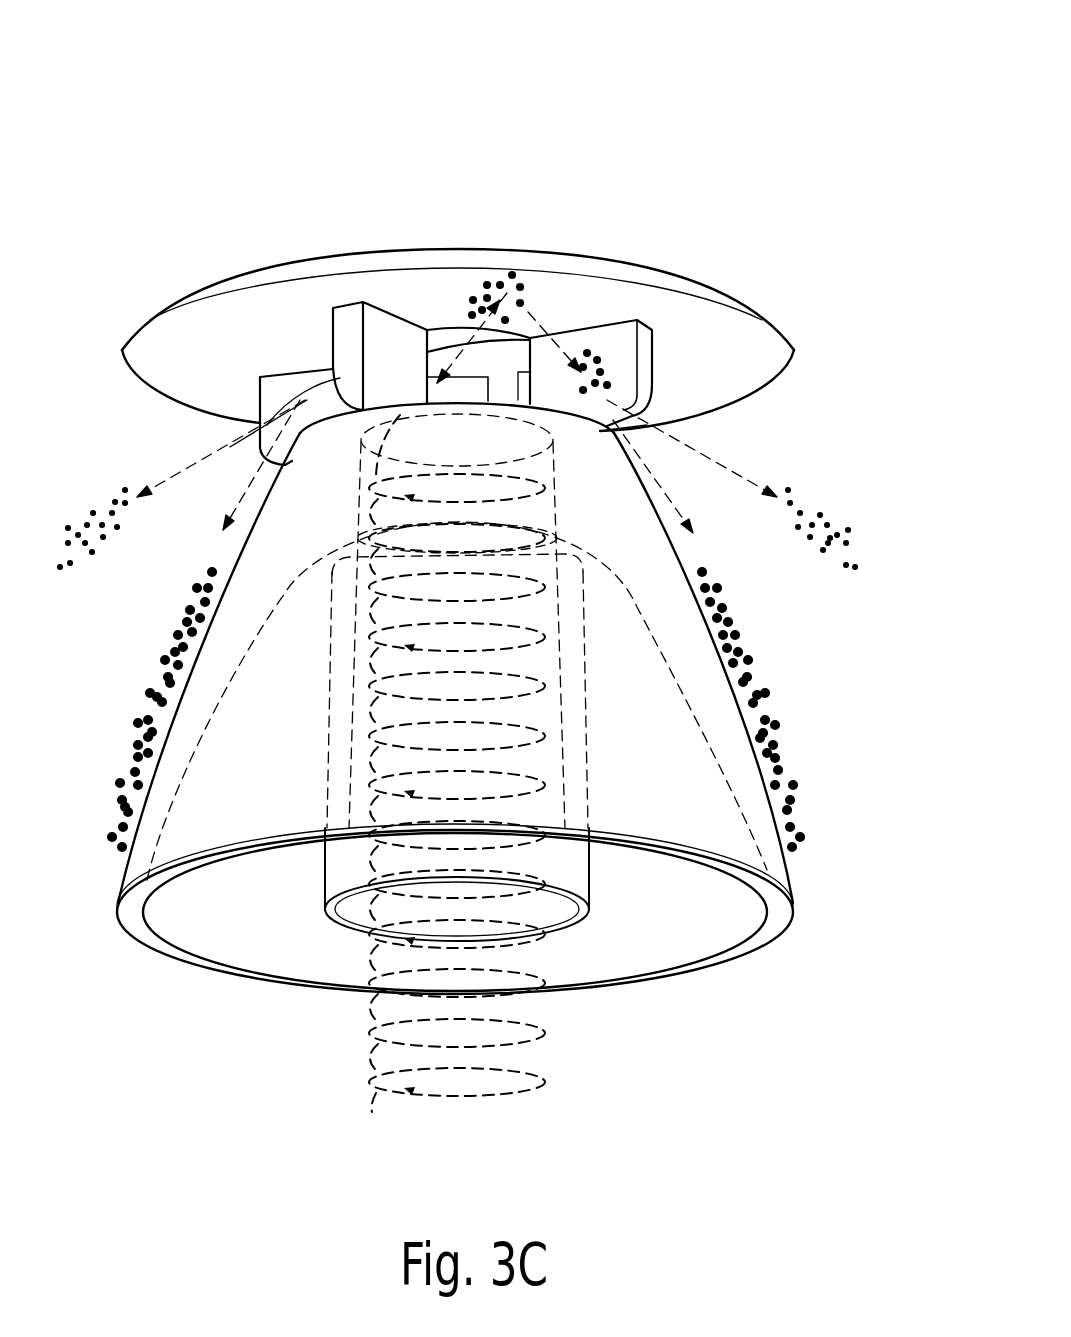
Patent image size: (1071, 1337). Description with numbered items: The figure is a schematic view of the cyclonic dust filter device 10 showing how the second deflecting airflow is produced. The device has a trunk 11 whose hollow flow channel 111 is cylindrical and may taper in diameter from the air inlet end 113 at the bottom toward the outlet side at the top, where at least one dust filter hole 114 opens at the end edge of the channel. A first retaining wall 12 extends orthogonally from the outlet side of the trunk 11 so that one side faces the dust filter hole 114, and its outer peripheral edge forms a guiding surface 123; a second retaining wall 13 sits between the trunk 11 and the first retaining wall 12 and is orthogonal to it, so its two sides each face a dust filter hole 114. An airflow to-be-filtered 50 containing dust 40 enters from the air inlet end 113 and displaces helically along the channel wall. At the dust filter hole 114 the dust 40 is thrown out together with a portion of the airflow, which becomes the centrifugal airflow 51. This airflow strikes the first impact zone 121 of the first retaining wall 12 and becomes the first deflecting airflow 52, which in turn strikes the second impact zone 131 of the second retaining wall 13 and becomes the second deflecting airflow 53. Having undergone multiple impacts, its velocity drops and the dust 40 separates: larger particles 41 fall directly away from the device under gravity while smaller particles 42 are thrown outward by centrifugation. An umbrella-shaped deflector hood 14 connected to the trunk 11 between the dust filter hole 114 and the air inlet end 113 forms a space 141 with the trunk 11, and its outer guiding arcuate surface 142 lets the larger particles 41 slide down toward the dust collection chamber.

The cyclonic dust filter device 10 is at (764, 45).
The trunk 11 is at (318, 873).
The hollow flow channel 111 is at (585, 913).
The air inlet end 113 is at (360, 913).
The dust filter hole 114 is at (273, 418).
The first retaining wall 12 is at (228, 272).
The first impact zone 121 is at (550, 290).
The guiding surface 123 is at (313, 263).
The second retaining wall 13 is at (655, 368).
The second impact zone 131 is at (620, 350).
The deflector hood 14 is at (800, 873).
The space 141 is at (717, 903).
The guiding arcuate surface 142 is at (150, 720).
The dust 40 is at (483, 283).
The larger particles 41 is at (737, 637).
The smaller particles 42 is at (847, 527).
The airflow to-be-filtered 50 is at (517, 1093).
The centrifugal airflow 51 is at (463, 337).
The first deflecting airflow 52 is at (550, 335).
The second deflecting airflow 53 is at (730, 470).